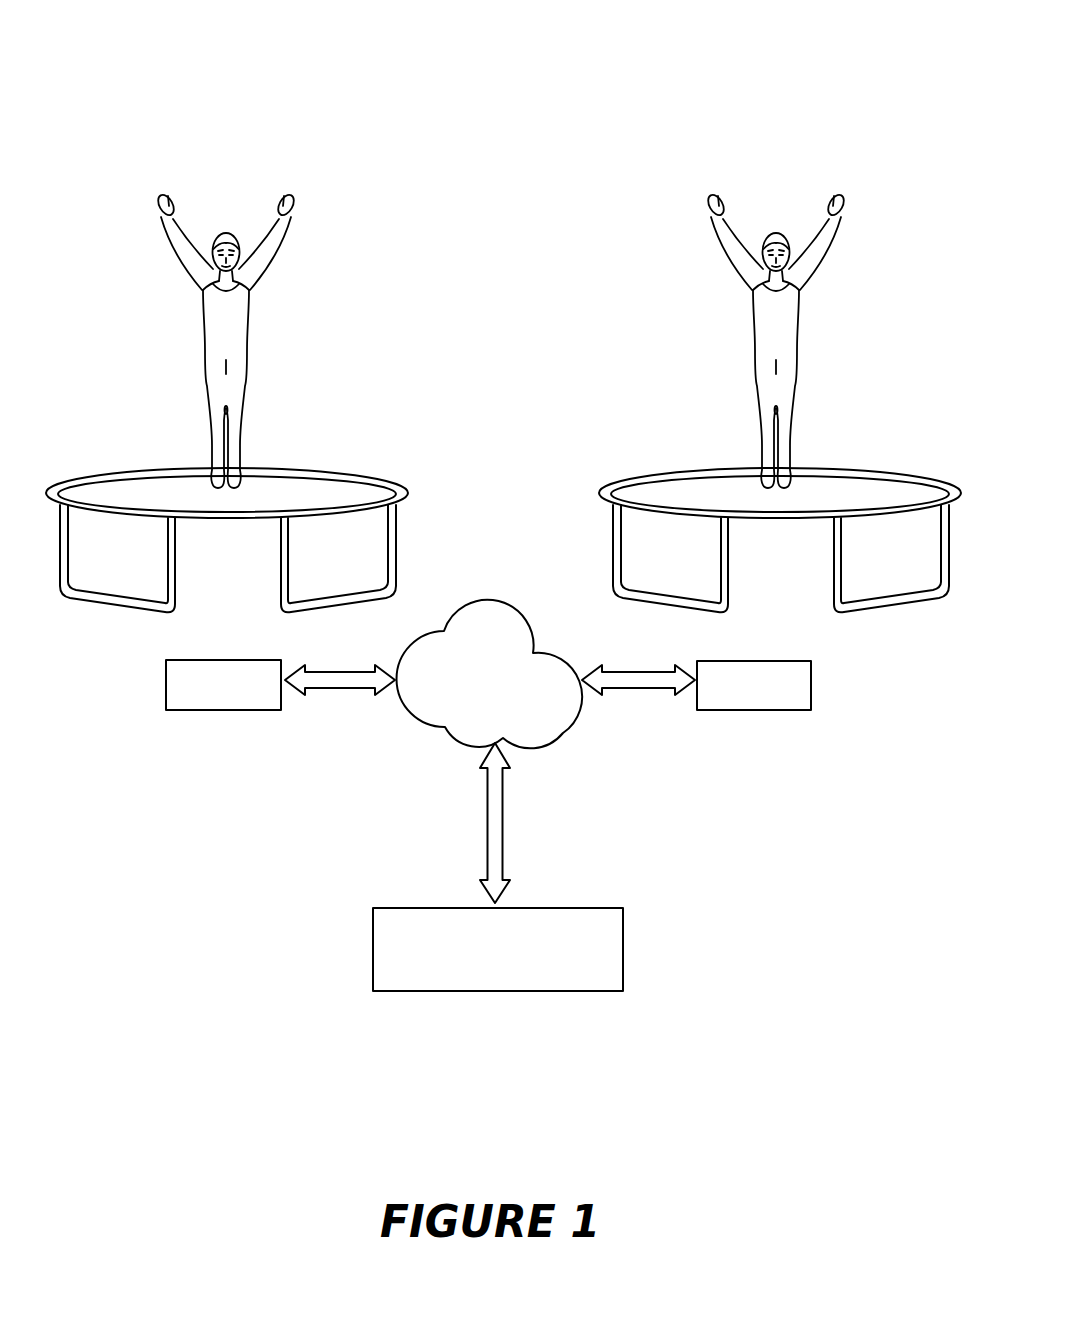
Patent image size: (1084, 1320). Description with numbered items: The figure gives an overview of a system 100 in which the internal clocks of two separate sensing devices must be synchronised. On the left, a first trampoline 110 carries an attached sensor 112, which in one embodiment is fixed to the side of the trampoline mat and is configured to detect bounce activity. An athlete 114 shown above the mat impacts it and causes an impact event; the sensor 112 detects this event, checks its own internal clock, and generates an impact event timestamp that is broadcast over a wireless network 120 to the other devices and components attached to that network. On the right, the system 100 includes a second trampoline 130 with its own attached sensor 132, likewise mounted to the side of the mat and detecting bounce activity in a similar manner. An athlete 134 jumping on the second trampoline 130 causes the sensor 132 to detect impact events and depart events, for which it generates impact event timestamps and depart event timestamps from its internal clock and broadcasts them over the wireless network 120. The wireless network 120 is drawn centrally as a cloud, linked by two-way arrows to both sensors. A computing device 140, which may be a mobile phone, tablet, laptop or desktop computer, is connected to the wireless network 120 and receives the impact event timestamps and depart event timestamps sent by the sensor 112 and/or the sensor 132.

The system 100 is at (727, 99).
The first trampoline 110 is at (100, 467).
The sensor 112 is at (217, 711).
The athlete 114 is at (200, 288).
The wireless network 120 is at (572, 742).
The second trampoline 130 is at (885, 472).
The sensor 132 is at (750, 711).
The athlete 134 is at (795, 296).
The computing device 140 is at (623, 942).